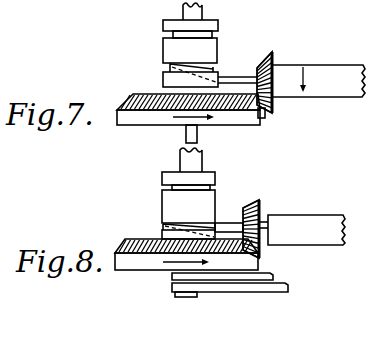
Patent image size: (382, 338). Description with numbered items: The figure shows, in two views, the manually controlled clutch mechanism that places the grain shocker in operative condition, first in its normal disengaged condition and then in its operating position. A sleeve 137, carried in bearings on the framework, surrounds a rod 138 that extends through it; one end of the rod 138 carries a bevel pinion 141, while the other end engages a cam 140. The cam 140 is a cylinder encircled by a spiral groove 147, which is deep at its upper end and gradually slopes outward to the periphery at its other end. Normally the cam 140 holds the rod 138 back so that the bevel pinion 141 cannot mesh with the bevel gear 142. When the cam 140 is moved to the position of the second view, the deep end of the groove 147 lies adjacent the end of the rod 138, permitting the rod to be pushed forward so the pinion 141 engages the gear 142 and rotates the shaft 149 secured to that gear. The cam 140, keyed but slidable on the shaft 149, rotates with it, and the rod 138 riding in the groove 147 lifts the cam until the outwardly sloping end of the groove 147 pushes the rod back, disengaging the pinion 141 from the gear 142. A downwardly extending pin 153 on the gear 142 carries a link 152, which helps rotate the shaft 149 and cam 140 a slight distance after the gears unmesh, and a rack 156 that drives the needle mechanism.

In FIG. 7, the sleeve 137 is at (318, 81).
In FIG. 7, the rod 138 is at (233, 80).
In FIG. 7, the cam 140 is at (176, 51).
In FIG. 7, the bevel pinion 141 is at (271, 63).
In FIG. 7, the bevel gear 142 is at (130, 120).
In FIG. 7, the spiral groove 147 is at (214, 67).
In FIG. 7, the shaft 149 is at (203, 10).
In FIG. 8, the shaft 149 is at (198, 164).
In FIG. 8, the link 152 is at (267, 293).
In FIG. 7, the downwardly extending pin 153 is at (198, 140).
In FIG. 8, the downwardly extending pin 153 is at (183, 297).
In FIG. 8, the rack 156 is at (263, 276).